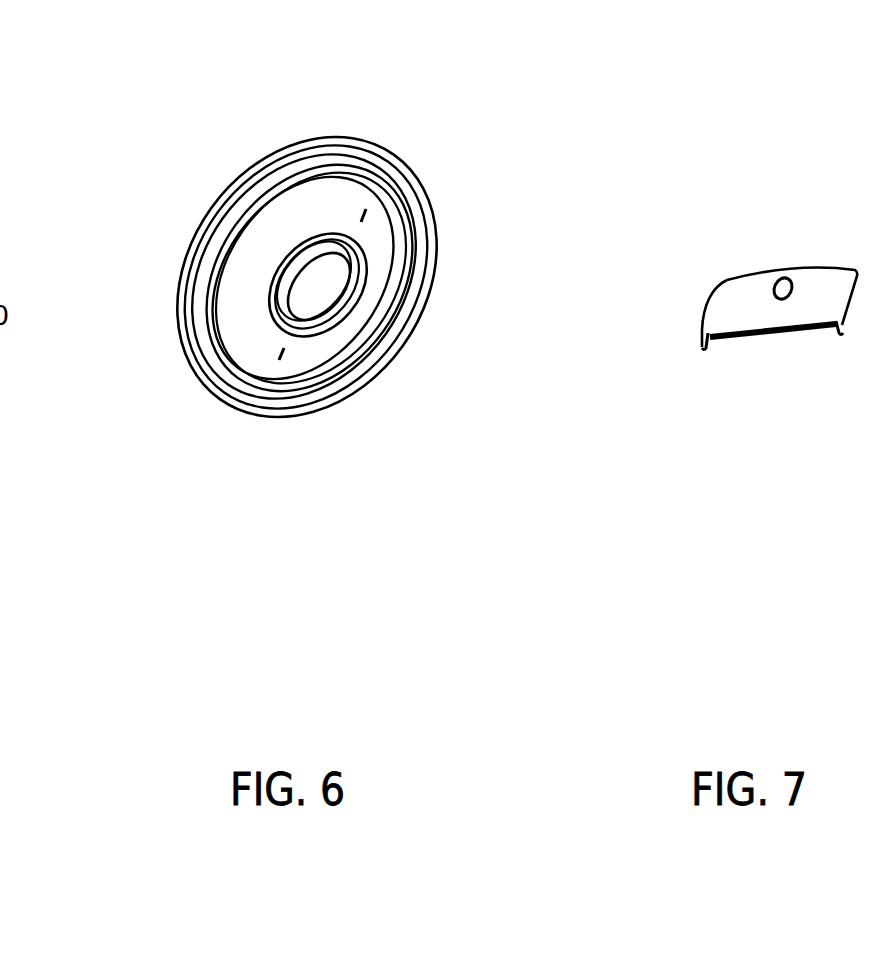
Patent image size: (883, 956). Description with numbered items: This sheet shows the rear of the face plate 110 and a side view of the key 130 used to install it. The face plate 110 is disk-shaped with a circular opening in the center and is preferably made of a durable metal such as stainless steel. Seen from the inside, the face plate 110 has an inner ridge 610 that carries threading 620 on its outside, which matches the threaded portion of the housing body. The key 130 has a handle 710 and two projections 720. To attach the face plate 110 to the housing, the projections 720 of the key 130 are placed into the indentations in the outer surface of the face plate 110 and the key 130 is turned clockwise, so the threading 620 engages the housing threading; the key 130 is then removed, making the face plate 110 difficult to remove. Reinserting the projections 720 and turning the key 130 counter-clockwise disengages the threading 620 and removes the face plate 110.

In FIG. 6, the face plate 110 is at (333, 104).
In FIG. 6, the inner ridge 610 is at (208, 237).
In FIG. 6, the threading 620 is at (378, 357).
In FIG. 7, the key 130 is at (791, 232).
In FIG. 7, the handle 710 is at (727, 280).
In FIG. 7, the projections 720 is at (704, 350).